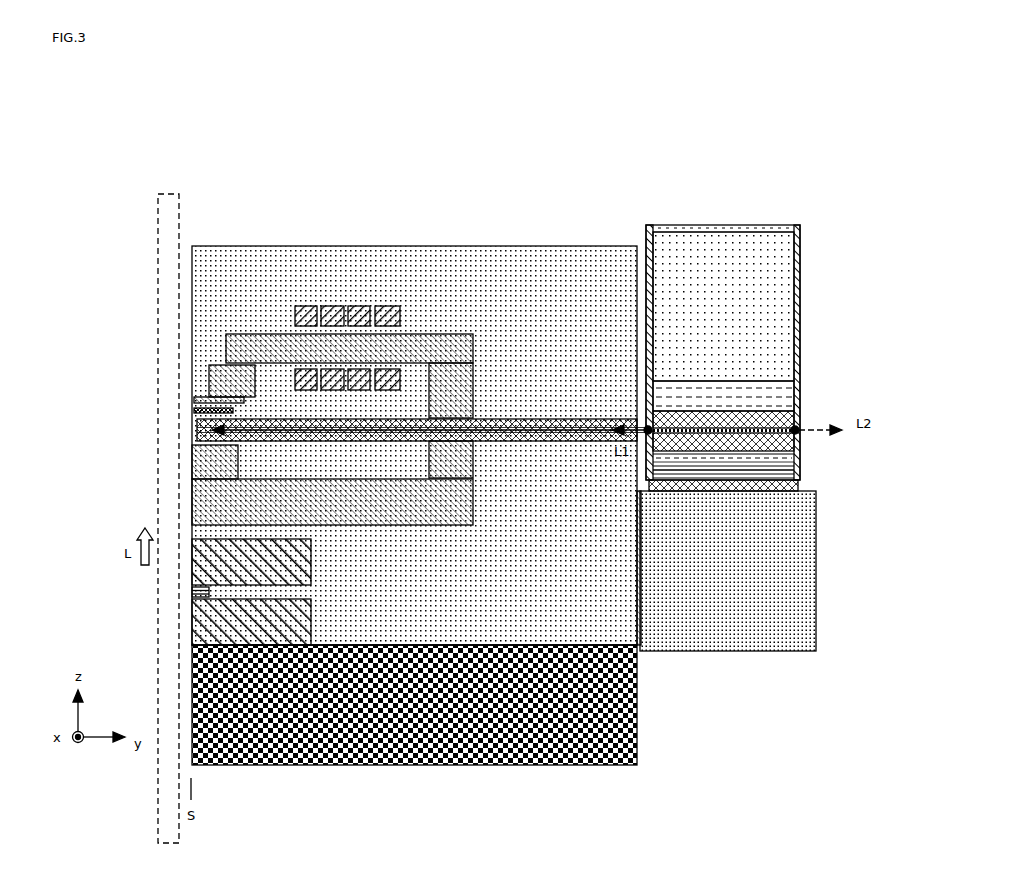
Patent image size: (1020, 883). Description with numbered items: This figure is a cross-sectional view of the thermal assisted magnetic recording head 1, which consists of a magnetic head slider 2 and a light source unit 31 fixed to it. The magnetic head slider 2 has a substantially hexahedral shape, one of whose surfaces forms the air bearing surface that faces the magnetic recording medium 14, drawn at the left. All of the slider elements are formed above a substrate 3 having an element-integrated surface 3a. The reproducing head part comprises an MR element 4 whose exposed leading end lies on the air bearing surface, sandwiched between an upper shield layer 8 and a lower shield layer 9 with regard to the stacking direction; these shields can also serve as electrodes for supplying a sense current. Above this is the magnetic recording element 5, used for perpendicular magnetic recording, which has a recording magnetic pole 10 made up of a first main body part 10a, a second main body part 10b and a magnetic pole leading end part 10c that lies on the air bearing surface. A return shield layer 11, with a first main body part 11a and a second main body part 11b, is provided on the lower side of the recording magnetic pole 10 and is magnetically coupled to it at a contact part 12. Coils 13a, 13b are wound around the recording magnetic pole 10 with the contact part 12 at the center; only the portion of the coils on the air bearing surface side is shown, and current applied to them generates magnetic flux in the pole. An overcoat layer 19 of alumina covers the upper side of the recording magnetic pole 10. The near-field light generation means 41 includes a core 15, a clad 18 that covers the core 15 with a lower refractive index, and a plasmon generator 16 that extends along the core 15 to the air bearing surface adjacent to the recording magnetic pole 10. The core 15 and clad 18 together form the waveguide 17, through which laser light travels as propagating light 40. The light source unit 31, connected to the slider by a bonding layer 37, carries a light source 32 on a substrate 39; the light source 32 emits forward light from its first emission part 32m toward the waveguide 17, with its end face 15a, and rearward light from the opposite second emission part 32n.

The thermal assisted magnetic recording head 1 is at (500, 108).
The magnetic head slider 2 is at (406, 224).
The substrate 3 is at (629, 680).
The element-integrated surface 3a is at (549, 635).
The MR element 4 is at (186, 584).
The magnetic recording element 5 is at (105, 420).
The upper shield layer 8 is at (303, 552).
The lower shield layer 9 is at (303, 612).
The recording magnetic pole 10 is at (90, 293).
The first main body part 10a is at (186, 330).
The second main body part 10b is at (201, 364).
The magnetic pole leading end part 10c is at (186, 392).
The return shield layer 11 is at (102, 447).
The first main body part 11a is at (186, 488).
The second main body part 11b is at (186, 456).
The contact part 12 is at (441, 392).
The coil 13a is at (300, 296).
The coil 13b is at (292, 358).
The magnetic recording medium 14 is at (158, 248).
The core 15 is at (502, 411).
The waveguide end face 15a is at (580, 434).
The plasmon generator 16 is at (186, 402).
The waveguide 17 is at (530, 388).
The clad 18 is at (346, 406).
The overcoat layer 19 is at (353, 250).
The light source unit 31 is at (730, 192).
The light source 32 is at (671, 216).
The first emission part 32m is at (640, 418).
The second emission part 32n is at (790, 418).
The bonding layer 37 is at (632, 595).
The substrate 39 is at (765, 644).
The propagating light 40 is at (289, 433).
The near-field light generation means 41 is at (492, 456).